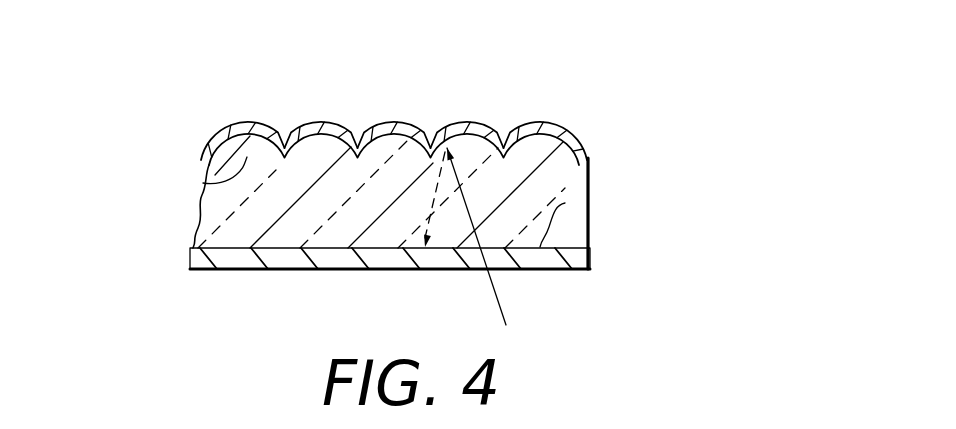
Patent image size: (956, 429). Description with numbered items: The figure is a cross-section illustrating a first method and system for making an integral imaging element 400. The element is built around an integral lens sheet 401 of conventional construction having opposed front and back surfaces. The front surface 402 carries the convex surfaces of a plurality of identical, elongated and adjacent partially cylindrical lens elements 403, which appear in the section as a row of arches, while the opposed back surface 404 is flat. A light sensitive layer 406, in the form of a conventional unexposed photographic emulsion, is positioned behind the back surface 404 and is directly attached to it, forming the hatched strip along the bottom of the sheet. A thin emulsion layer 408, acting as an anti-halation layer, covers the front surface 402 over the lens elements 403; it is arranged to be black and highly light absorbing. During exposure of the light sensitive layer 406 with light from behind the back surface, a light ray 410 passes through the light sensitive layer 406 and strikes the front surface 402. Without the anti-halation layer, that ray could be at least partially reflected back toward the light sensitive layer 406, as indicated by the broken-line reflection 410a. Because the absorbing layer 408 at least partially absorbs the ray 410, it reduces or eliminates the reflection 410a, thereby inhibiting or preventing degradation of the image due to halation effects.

The integral imaging element 400 is at (163, 230).
The integral lens sheet 401 is at (560, 182).
The front surface 402 is at (203, 183).
The lens elements 403 is at (250, 124).
The back surface 404 is at (589, 201).
The light sensitive layer 406 is at (575, 256).
The emulsion layer 408 is at (567, 126).
The light ray 410 is at (500, 296).
The reflection 410a is at (435, 198).